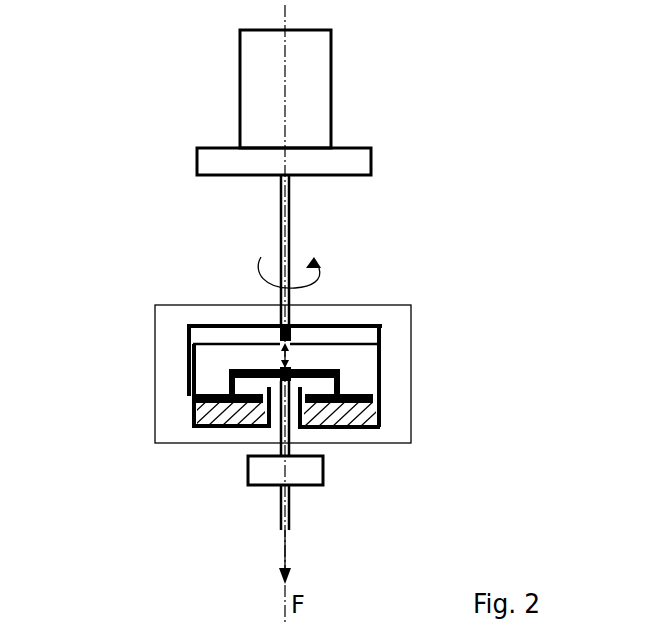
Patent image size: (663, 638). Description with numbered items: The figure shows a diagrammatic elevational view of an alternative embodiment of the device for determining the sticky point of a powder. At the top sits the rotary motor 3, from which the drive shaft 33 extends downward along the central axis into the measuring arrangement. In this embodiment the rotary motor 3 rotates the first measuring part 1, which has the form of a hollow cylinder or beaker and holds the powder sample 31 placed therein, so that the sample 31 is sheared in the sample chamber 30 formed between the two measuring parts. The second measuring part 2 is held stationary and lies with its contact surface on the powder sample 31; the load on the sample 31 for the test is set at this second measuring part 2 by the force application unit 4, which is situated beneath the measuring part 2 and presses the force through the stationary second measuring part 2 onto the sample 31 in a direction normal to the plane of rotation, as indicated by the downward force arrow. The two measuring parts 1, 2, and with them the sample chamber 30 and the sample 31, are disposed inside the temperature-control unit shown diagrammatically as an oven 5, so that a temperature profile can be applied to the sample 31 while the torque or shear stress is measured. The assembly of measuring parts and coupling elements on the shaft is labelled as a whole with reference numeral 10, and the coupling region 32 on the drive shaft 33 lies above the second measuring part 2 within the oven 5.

The first measuring part 1 is at (196, 418).
The second measuring part 2 is at (362, 394).
The rotary motor 3 is at (284, 102).
The force application unit 4 is at (342, 496).
The oven 5 is at (398, 415).
The measuring device 10 is at (328, 414).
The sample chamber 30 is at (342, 417).
The powder sample 31 is at (222, 418).
The coupling 32 is at (290, 358).
The drive shaft 33 is at (290, 208).